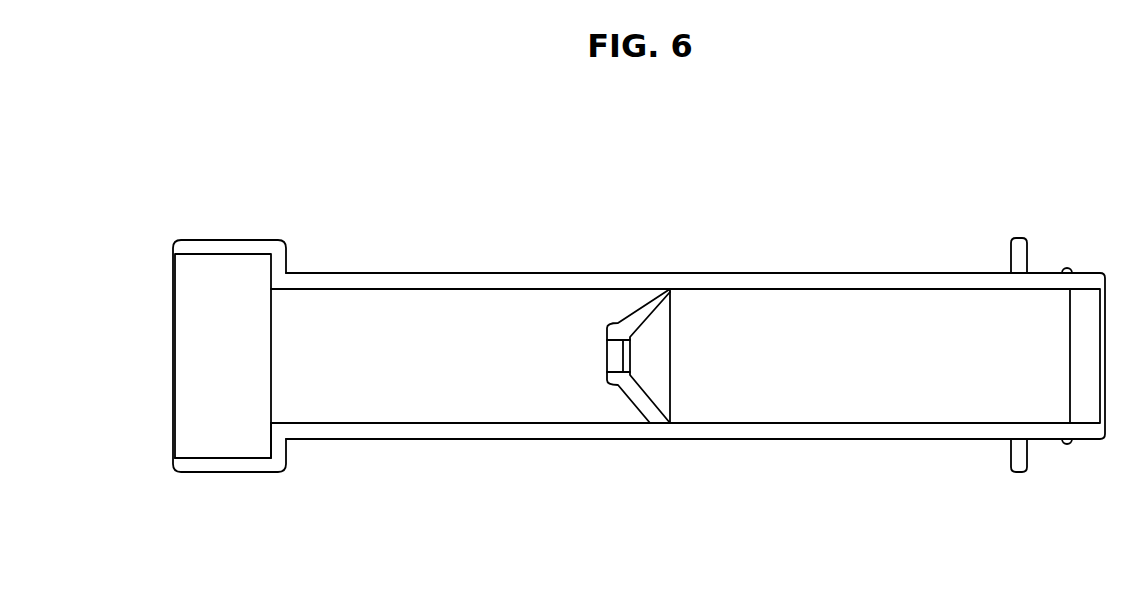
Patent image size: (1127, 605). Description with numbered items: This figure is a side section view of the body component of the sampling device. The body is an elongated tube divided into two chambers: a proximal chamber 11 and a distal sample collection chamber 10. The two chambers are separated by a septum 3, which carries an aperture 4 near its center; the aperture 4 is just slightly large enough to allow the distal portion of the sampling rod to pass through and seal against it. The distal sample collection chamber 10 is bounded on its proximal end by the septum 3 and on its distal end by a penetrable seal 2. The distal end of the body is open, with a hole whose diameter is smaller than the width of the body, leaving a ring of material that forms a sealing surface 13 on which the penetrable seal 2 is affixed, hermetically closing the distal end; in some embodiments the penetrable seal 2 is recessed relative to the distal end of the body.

The penetrable seal 2 is at (266, 370).
The septum 3 is at (647, 298).
The aperture 4 is at (617, 355).
The distal sample collection chamber 10 is at (432, 377).
The proximal chamber 11 is at (832, 373).
The sealing surface 13 is at (266, 441).